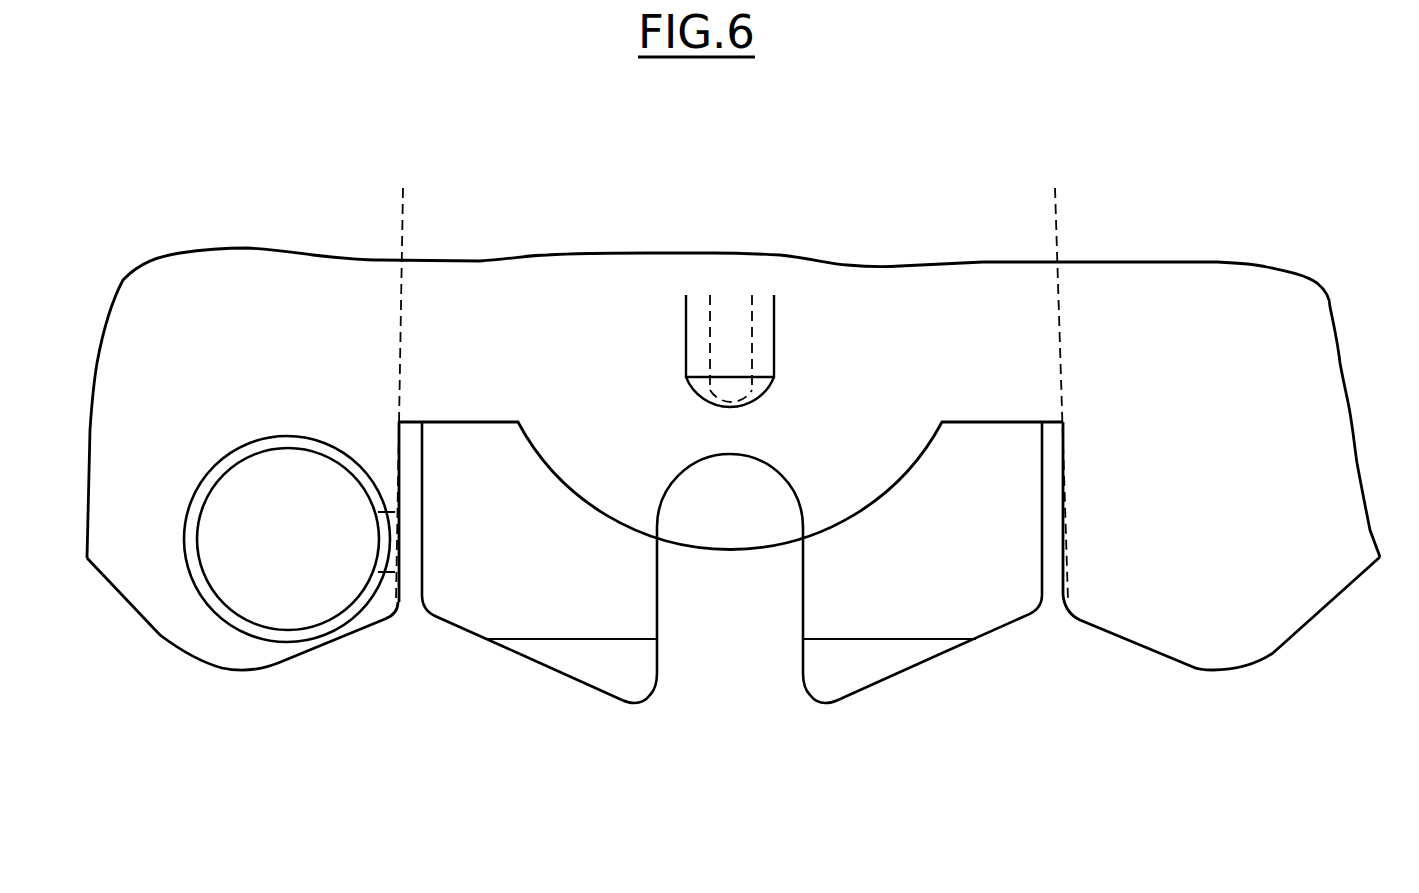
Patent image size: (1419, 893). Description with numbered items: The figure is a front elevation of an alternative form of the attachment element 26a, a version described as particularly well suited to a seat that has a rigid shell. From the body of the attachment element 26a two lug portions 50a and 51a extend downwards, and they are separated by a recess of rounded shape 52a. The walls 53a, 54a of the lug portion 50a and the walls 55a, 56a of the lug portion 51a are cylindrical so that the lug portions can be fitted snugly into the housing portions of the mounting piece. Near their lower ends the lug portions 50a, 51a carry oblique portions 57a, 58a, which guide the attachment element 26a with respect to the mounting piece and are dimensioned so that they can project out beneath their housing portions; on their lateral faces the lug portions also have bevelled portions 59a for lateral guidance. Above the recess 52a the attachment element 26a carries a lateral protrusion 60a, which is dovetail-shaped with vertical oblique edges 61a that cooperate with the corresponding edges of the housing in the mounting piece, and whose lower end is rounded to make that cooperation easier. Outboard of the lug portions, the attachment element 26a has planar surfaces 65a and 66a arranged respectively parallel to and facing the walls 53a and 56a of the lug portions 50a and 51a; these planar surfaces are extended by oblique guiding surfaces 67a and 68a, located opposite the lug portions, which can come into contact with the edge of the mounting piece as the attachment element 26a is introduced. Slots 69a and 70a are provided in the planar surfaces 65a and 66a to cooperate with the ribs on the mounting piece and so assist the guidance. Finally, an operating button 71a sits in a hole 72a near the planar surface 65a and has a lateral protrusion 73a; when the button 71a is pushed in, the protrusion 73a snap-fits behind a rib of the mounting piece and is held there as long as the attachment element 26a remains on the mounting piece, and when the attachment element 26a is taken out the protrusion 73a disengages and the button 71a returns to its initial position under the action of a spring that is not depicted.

The attachment element 26a is at (538, 315).
The lug portion 50a is at (551, 572).
The lug portion 51a is at (897, 573).
The recess of rounded shape 52a is at (757, 465).
The wall 53a is at (422, 527).
The wall 54a is at (660, 597).
The wall 55a is at (800, 597).
The wall 56a is at (1042, 527).
The oblique portion 57a is at (570, 665).
The oblique portion 58a is at (875, 667).
The bevelled portion 59a is at (638, 658).
The lateral protrusion 60a is at (727, 327).
The vertical oblique edge 61a is at (698, 352).
The planar surface 65a is at (403, 577).
The planar surface 66a is at (1060, 583).
The oblique guiding surface 67a is at (250, 672).
The oblique guiding surface 68a is at (1217, 668).
The slot 69a is at (411, 378).
The slot 70a is at (1053, 378).
The operating button 71a is at (265, 513).
The hole 72a is at (294, 437).
The lateral protrusion 73a is at (396, 525).